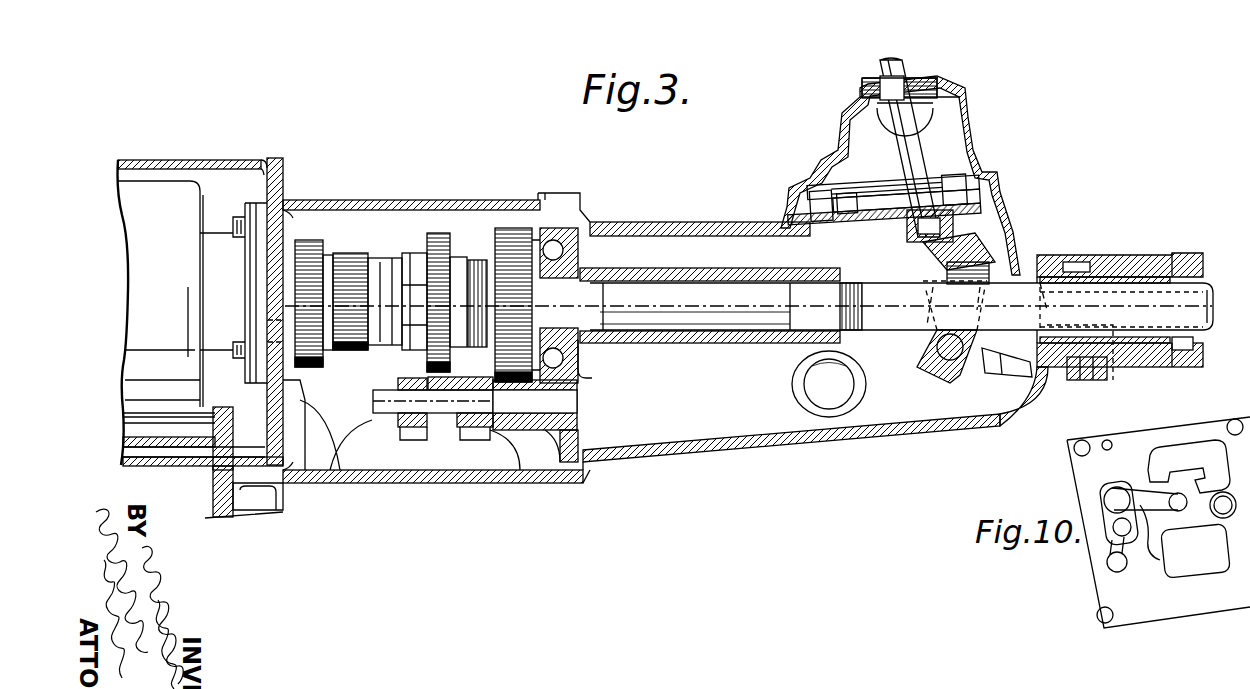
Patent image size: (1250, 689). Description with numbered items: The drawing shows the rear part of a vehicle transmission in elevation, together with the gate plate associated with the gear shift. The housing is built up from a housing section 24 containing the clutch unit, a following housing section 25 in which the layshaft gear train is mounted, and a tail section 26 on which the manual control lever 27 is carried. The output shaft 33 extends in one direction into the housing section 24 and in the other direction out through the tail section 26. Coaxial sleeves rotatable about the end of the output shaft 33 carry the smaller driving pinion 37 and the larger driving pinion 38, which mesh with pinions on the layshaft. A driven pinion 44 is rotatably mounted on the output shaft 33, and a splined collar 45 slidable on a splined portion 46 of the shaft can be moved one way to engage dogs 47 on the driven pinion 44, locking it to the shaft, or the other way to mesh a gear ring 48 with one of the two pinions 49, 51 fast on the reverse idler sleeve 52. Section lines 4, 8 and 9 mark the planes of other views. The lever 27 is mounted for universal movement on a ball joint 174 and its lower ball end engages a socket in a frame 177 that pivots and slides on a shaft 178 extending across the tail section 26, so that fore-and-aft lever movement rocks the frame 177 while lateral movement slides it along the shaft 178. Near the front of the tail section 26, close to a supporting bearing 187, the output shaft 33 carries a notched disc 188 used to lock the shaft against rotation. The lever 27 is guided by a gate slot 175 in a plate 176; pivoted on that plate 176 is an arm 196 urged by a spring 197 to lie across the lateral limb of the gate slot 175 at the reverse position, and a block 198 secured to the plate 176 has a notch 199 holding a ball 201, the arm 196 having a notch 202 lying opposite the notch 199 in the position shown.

In FIG. 3, the housing section 24 is at (255, 158).
In FIG. 3, the housing section 25 is at (380, 483).
In FIG. 3, the tail section 26 is at (778, 448).
In FIG. 3, the manual control lever 27 is at (905, 78).
In FIG. 3, the output shaft 33 is at (640, 283).
In FIG. 3, the smaller driving pinion 37 is at (350, 253).
In FIG. 3, the larger driving pinion 38 is at (313, 240).
In FIG. 3, the driven pinion 44 is at (518, 228).
In FIG. 3, the splined collar 45 is at (414, 253).
In FIG. 3, the splined portion 46 is at (390, 262).
In FIG. 3, the dogs 47 is at (478, 260).
In FIG. 3, the gear ring 48 is at (450, 245).
In FIG. 3, the pinion 49 is at (540, 462).
In FIG. 3, the pinion 51 is at (375, 440).
In FIG. 3, the reverse idler sleeve 52 is at (448, 430).
In FIG. 3, the section line 4 is at (452, 507).
In FIG. 3, the section line 8 is at (931, 460).
In FIG. 3, the section line 9 is at (612, 509).
In FIG. 3, the ball joint 174 is at (965, 108).
In FIG. 3, the gate slot 175 is at (900, 220).
In FIG. 10, the gate slot 175 is at (1183, 455).
In FIG. 3, the plate 176 is at (1000, 196).
In FIG. 10, the plate 176 is at (1195, 610).
In FIG. 3, the frame 177 is at (950, 400).
In FIG. 3, the shaft 178 is at (938, 348).
In FIG. 3, the supporting bearing 187 is at (555, 228).
In FIG. 3, the disc 188 is at (590, 372).
In FIG. 10, the arm 196 is at (1203, 512).
In FIG. 10, the spring 197 is at (1108, 548).
In FIG. 10, the block 198 is at (1105, 520).
In FIG. 10, the notch 199 is at (1105, 505).
In FIG. 10, the ball 201 is at (1105, 497).
In FIG. 10, the notch 202 is at (1150, 540).